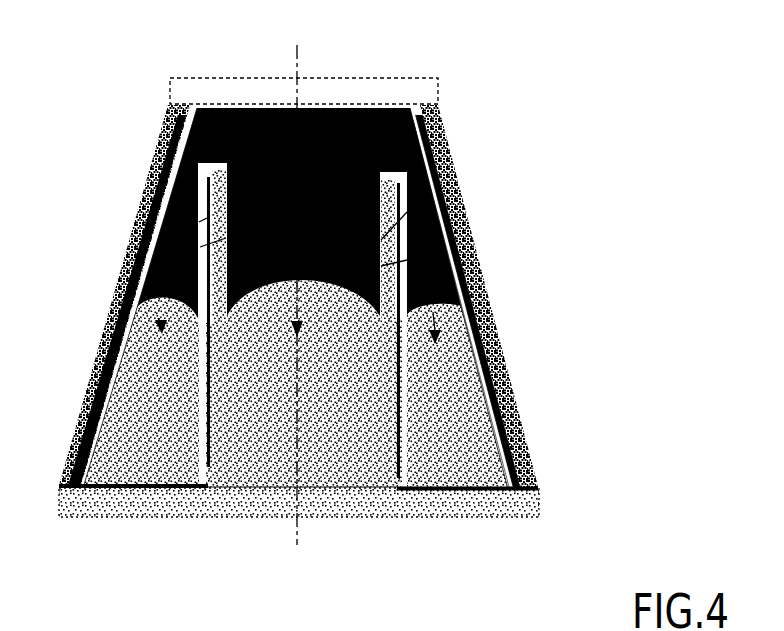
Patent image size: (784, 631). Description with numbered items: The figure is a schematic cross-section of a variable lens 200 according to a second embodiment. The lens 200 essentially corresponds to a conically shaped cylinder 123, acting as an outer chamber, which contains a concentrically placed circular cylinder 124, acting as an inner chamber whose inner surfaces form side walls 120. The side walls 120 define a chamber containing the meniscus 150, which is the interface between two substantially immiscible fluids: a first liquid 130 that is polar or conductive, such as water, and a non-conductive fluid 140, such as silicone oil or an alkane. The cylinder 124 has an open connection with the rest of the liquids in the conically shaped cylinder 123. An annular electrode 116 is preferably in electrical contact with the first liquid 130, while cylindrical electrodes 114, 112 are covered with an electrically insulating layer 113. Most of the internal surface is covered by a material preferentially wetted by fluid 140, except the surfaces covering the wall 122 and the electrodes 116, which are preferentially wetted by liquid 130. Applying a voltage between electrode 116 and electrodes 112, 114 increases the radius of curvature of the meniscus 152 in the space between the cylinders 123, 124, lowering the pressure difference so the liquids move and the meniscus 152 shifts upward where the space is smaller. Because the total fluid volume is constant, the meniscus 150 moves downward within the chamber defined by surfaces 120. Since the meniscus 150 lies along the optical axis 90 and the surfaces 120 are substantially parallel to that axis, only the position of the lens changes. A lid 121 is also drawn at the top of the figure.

The optical axis 90 is at (303, 58).
The cylindrical electrode 112 is at (110, 347).
The electrically insulating layer 113 is at (457, 265).
The cylindrical electrode 114 is at (172, 200).
The annular electrode 116 is at (118, 488).
The side walls 120 is at (157, 222).
The cover plate 121 is at (358, 100).
The wall 122 is at (310, 488).
The conically shaped cylinder 123 is at (163, 122).
The circular cylinder 124 is at (213, 483).
The first liquid 130 is at (475, 467).
The fluid 140 is at (225, 108).
The meniscus 150 is at (464, 240).
The meniscus 152 is at (158, 318).
The variable lens 200 is at (555, 493).